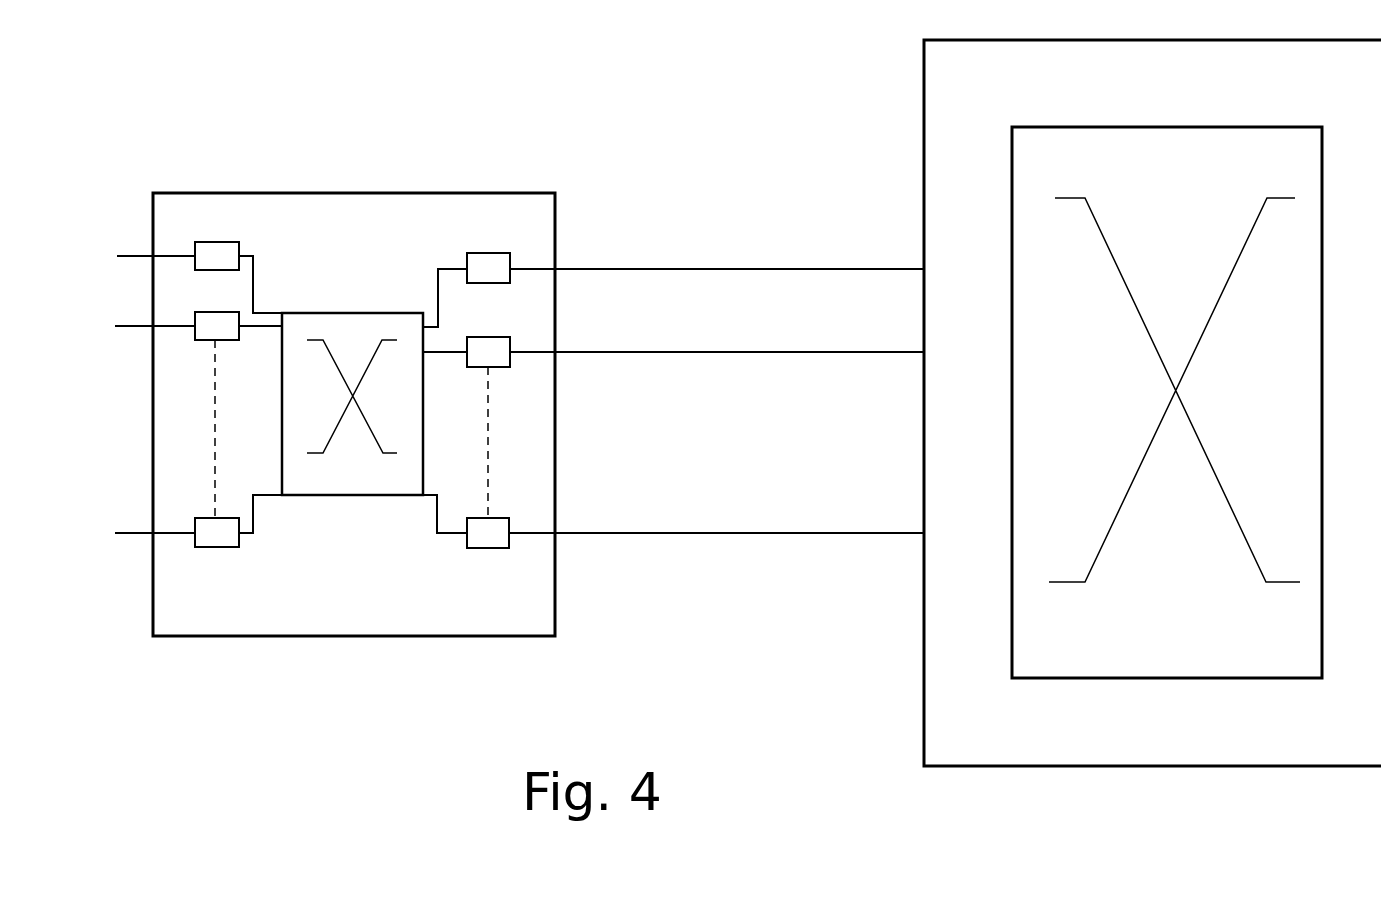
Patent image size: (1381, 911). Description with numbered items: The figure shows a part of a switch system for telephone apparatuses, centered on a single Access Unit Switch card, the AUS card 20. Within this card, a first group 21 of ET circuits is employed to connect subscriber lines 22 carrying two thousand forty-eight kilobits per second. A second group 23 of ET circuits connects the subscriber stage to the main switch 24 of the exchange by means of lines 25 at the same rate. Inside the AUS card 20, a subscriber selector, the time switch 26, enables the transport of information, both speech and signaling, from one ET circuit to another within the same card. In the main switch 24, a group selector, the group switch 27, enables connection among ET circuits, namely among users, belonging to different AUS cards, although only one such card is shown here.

The AUS card 20 is at (463, 628).
The first group of ET circuits 21 is at (217, 240).
The subscriber lines 22 is at (135, 255).
The second group of ET circuits 23 is at (490, 253).
The main switch 24 is at (947, 666).
The lines to main switch 25 is at (650, 270).
The subscriber selector TS (Time Switch) 26 is at (347, 328).
The group selector GS (Group Switch) 27 is at (1030, 430).